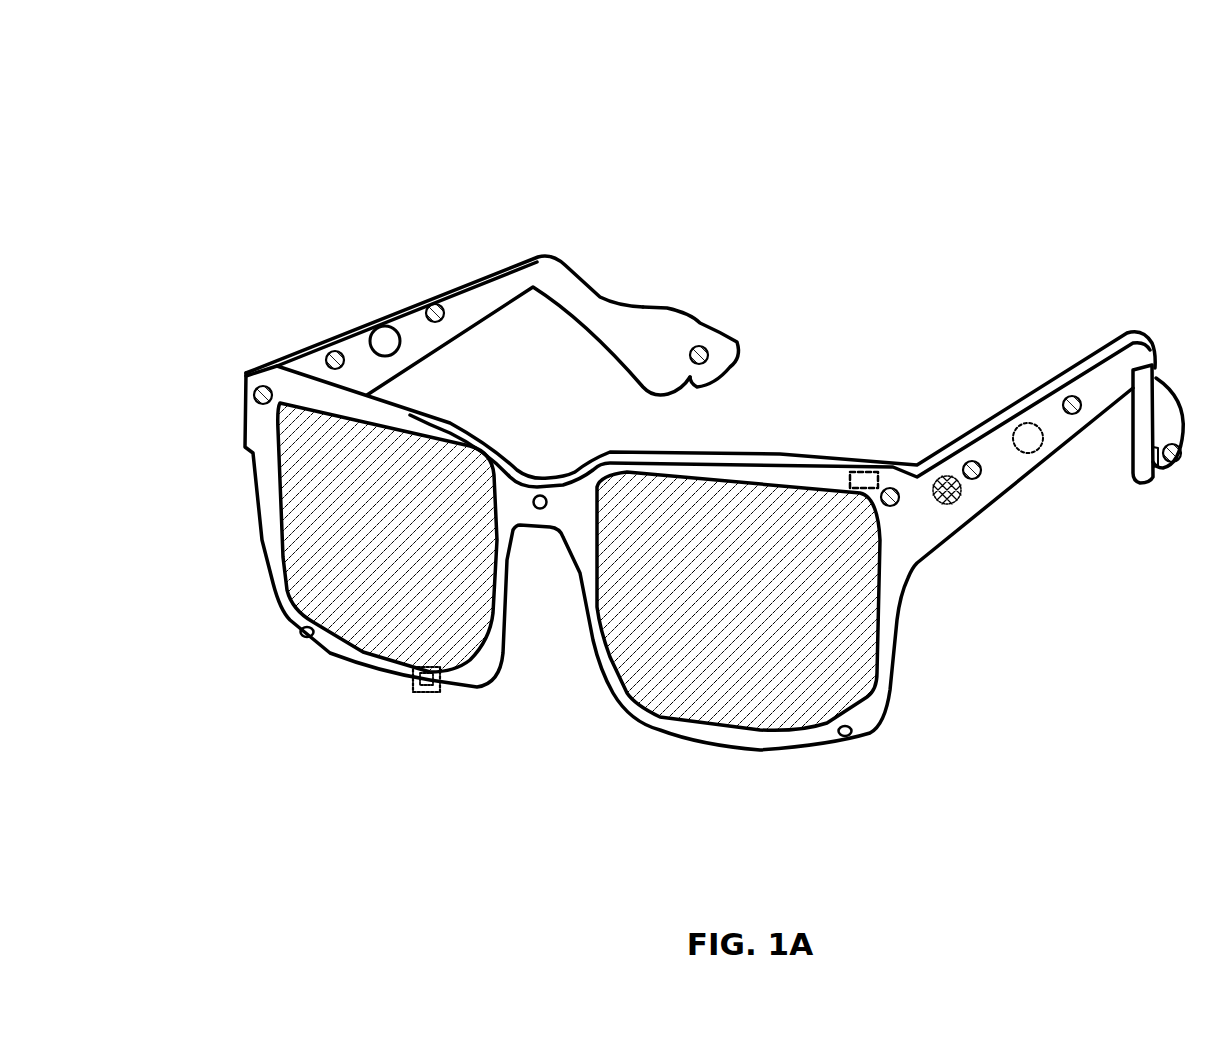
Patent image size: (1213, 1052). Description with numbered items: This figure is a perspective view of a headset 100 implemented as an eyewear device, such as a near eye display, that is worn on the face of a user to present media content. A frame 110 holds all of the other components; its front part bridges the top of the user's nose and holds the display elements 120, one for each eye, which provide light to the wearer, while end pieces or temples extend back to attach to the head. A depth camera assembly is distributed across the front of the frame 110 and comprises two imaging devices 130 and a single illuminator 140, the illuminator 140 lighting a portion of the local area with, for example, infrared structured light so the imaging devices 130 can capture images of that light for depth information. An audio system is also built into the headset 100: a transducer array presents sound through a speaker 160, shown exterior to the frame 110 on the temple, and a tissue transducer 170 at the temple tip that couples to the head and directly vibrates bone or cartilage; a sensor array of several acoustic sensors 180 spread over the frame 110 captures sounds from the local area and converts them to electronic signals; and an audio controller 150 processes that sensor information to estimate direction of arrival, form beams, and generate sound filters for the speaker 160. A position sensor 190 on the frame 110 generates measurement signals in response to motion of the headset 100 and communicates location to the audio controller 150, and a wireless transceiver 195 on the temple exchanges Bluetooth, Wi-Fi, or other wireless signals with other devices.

The headset 100 is at (181, 88).
The frame 110 is at (1137, 331).
The display element 120 is at (328, 535).
The imaging device 130 is at (300, 637).
The illuminator 140 is at (540, 509).
The audio controller 150 is at (860, 476).
The speaker 160 is at (393, 326).
The tissue transducer 170 is at (660, 312).
The acoustic sensor 180 is at (263, 386).
The position sensor 190 is at (422, 690).
The wireless transceiver 195 is at (947, 478).